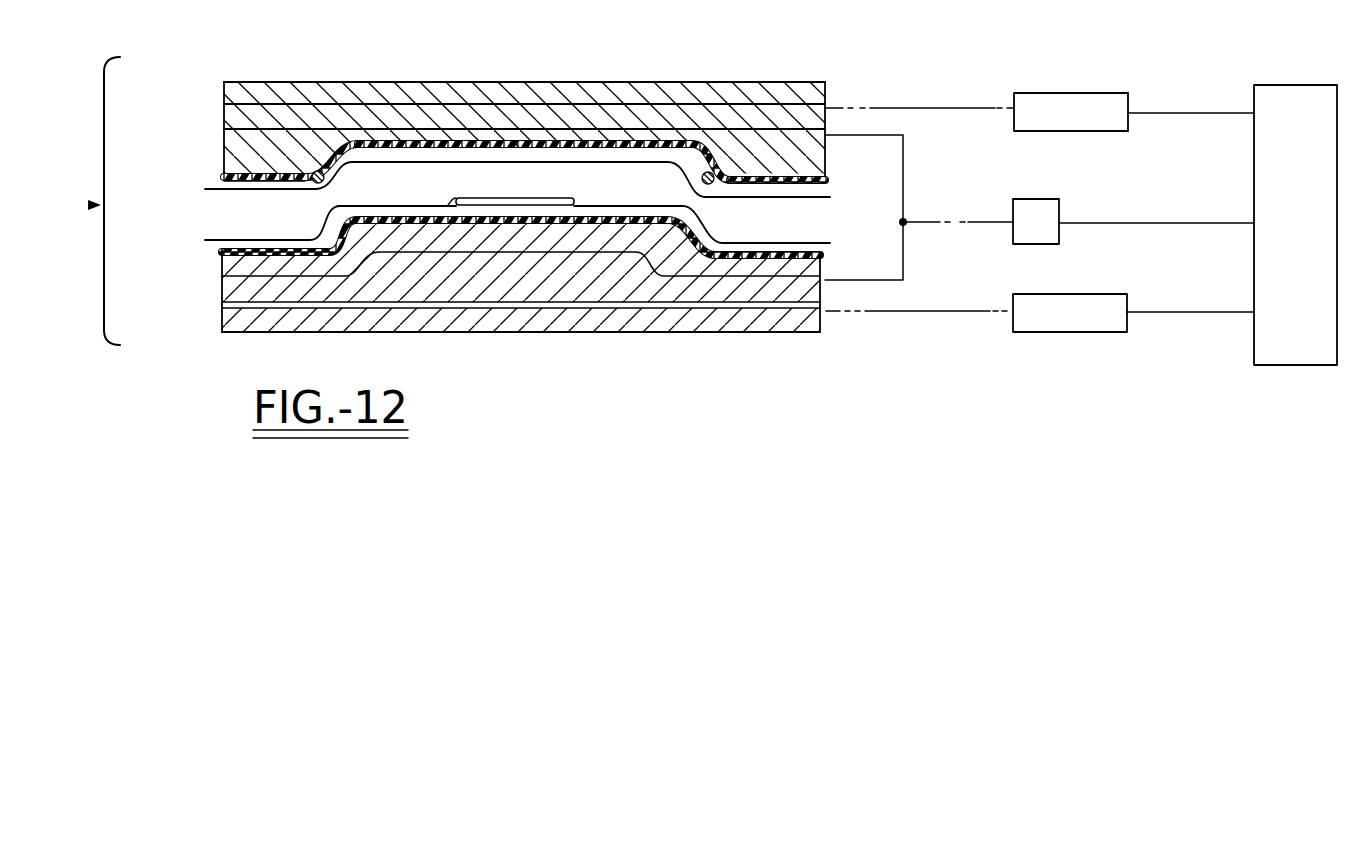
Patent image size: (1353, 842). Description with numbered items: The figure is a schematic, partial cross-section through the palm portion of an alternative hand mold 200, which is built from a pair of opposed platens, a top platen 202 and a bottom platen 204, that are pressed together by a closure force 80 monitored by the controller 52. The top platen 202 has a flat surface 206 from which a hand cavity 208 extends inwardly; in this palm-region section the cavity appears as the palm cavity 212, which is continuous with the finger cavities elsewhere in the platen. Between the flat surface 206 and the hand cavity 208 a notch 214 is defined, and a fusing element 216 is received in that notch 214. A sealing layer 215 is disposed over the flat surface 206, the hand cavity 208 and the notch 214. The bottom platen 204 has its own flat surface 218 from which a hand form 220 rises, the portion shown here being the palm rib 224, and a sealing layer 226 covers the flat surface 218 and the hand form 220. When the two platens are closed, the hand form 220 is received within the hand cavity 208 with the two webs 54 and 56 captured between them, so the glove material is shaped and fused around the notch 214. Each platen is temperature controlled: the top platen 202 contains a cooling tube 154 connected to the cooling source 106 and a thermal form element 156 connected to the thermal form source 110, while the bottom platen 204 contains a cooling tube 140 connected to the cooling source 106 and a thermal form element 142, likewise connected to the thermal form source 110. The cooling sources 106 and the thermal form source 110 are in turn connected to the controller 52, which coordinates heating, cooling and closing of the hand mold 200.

The controller 52 is at (1308, 85).
The web 54 is at (210, 239).
The web 56 is at (207, 190).
The closure force 80 is at (518, 36).
The cooling source 106 is at (1125, 93).
The thermal form source 110 is at (1059, 199).
The cooling tube 140 is at (677, 310).
The thermal form element 142 is at (903, 262).
The cooling tube 154 is at (583, 103).
The thermal form element 156 is at (903, 180).
The hand mold 200 is at (77, 201).
The platen 202 is at (222, 138).
The platen 204 is at (222, 317).
The flat surface 206 is at (222, 167).
The hand cavity 208 is at (553, 165).
The palm cavity 212 is at (622, 152).
The notch 214 is at (303, 167).
The sealing layer 215 is at (222, 179).
The fusing element 216 is at (325, 176).
The flat surface 218 is at (222, 280).
The hand form 220 is at (520, 255).
The palm rib 224 is at (443, 226).
The sealing layer 226 is at (222, 256).